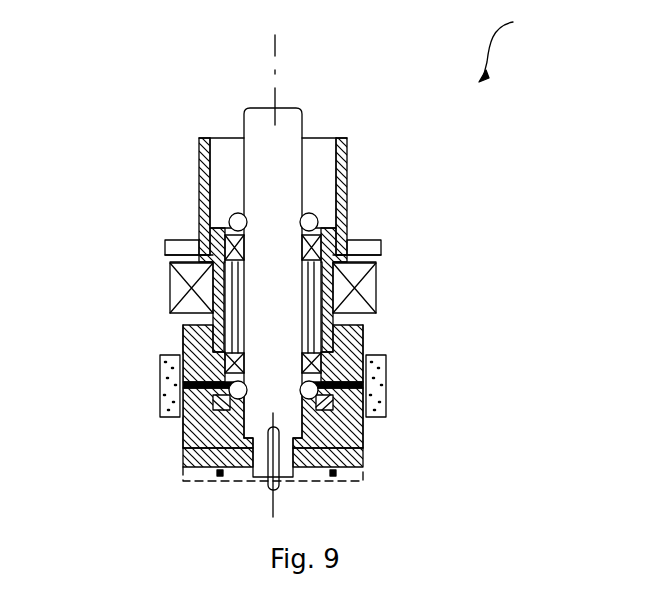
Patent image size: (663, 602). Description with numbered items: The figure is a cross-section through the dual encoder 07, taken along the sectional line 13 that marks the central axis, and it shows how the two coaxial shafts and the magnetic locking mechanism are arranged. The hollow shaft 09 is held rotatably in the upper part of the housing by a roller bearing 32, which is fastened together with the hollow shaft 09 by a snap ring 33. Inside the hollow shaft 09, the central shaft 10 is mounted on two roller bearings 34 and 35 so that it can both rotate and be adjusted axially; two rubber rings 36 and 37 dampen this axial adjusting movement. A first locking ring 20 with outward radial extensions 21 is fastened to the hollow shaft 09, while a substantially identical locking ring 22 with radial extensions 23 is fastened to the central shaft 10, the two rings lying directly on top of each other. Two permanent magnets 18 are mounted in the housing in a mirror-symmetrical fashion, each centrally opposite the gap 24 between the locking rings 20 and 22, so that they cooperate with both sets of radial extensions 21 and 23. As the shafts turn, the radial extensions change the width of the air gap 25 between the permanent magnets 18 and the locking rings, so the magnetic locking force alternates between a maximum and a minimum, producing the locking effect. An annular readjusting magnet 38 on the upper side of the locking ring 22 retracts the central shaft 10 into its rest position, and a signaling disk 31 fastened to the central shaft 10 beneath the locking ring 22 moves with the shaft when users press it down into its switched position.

The dual encoder 07 is at (517, 43).
The hollow shaft 09 is at (347, 174).
The central shaft 10 is at (293, 128).
The axis of rotation 13 is at (280, 47).
The permanent magnet 18 is at (160, 392).
The first locking ring 20 is at (183, 325).
The radial extensions 21 is at (333, 344).
The locking ring 22 is at (213, 410).
The radial extensions 23 is at (363, 426).
The gap 24 is at (388, 371).
The air gap 25 is at (177, 354).
The signaling disk 31 is at (363, 457).
The roller bearing 32 is at (365, 287).
The snap ring 33 is at (175, 240).
The roller bearing 34 is at (326, 352).
The roller bearing 35 is at (328, 244).
The rubber ring 36 is at (318, 218).
The rubber ring 37 is at (160, 380).
The readjusting magnet 38 is at (182, 421).